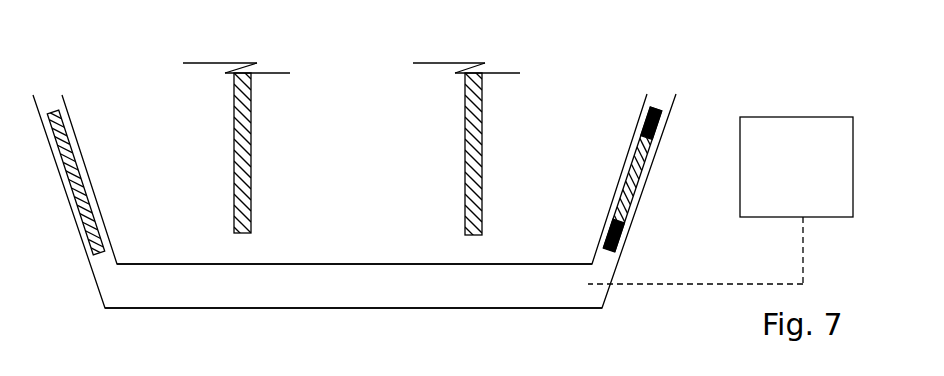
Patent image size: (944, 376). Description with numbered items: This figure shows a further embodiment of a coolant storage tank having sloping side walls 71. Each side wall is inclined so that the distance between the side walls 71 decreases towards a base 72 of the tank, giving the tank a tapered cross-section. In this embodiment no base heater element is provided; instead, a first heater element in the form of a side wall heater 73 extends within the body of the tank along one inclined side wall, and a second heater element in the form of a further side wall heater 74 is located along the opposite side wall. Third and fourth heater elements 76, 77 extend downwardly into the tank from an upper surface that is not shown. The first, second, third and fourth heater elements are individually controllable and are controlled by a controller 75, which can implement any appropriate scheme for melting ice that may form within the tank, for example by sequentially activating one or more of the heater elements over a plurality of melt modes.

The sloping side walls 71 is at (48, 101).
The base 72 is at (209, 289).
The side wall heater 73 is at (70, 185).
The further side wall heater 74 is at (623, 227).
The controller 75 is at (812, 183).
The third heater element 76 is at (242, 163).
The fourth heater element 77 is at (482, 165).